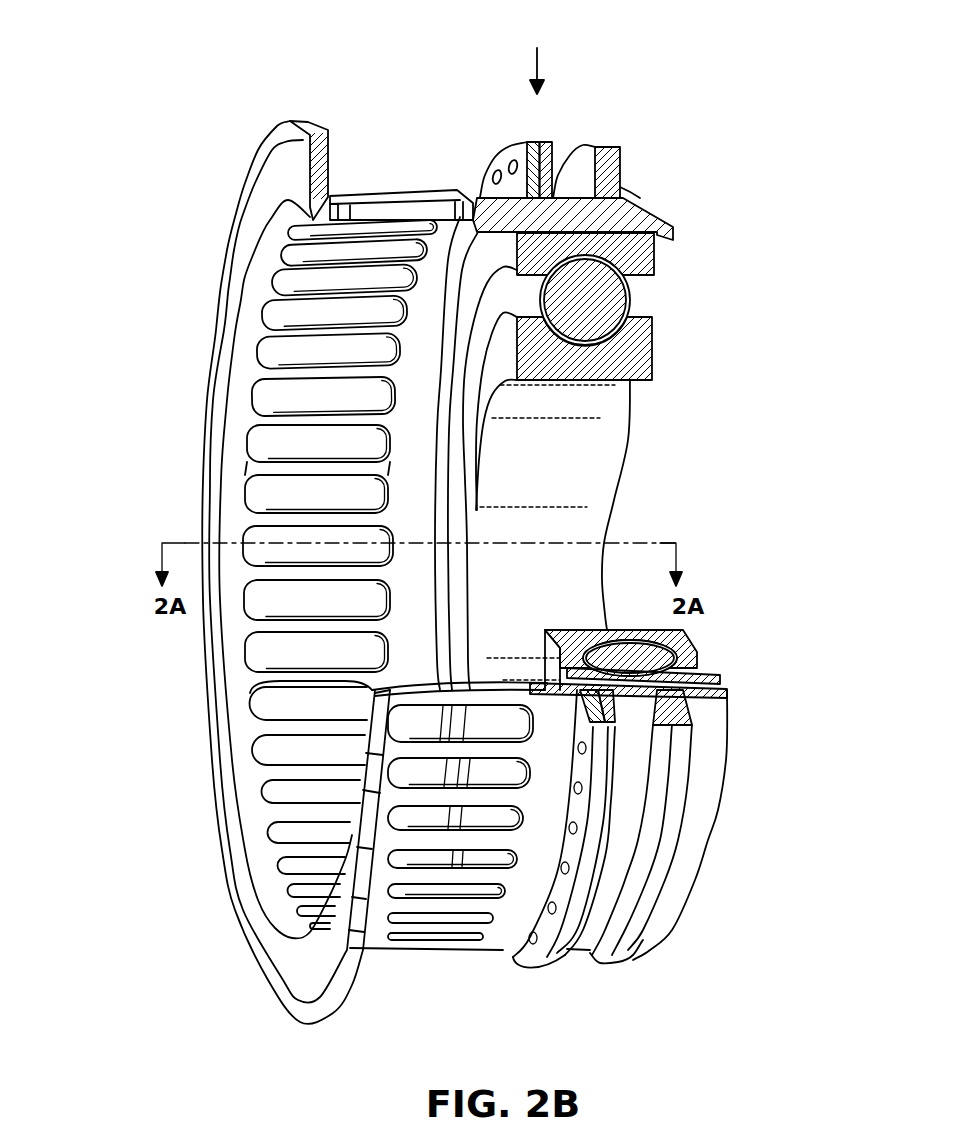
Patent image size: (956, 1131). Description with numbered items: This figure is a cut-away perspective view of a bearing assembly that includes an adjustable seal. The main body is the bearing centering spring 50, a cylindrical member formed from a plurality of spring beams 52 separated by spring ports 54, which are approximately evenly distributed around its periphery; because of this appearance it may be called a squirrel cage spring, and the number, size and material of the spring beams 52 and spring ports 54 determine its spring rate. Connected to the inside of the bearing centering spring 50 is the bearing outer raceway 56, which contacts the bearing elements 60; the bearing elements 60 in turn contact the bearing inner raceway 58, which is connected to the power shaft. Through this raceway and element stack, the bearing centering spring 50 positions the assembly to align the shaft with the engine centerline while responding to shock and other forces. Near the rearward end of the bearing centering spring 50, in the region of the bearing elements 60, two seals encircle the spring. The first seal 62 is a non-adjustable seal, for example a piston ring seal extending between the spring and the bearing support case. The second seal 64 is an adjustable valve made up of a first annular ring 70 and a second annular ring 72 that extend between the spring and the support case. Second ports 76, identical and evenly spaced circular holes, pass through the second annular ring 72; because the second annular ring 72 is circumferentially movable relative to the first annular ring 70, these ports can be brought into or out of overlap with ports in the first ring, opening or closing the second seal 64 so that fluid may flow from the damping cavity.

The bearing centering spring 50 is at (282, 124).
The spring beams 52 is at (304, 432).
The spring ports 54 is at (282, 490).
The bearing outer raceway 56 is at (657, 255).
The bearing inner raceway 58 is at (655, 355).
The bearing elements 60 is at (632, 300).
The first seal 62 is at (622, 156).
The second seal 64 is at (545, 56).
The first annular ring 70 is at (548, 142).
The second annular ring 72 is at (538, 142).
The second ports 76 is at (493, 175).